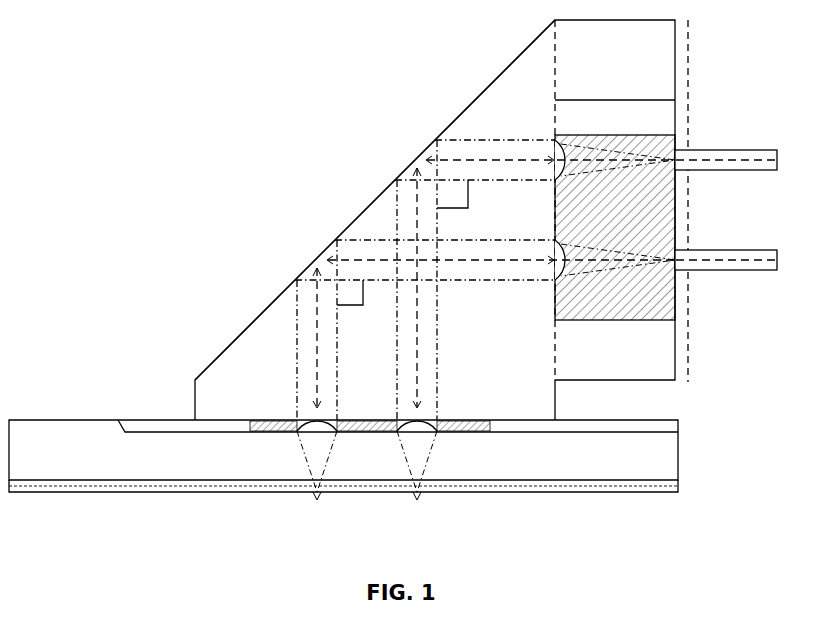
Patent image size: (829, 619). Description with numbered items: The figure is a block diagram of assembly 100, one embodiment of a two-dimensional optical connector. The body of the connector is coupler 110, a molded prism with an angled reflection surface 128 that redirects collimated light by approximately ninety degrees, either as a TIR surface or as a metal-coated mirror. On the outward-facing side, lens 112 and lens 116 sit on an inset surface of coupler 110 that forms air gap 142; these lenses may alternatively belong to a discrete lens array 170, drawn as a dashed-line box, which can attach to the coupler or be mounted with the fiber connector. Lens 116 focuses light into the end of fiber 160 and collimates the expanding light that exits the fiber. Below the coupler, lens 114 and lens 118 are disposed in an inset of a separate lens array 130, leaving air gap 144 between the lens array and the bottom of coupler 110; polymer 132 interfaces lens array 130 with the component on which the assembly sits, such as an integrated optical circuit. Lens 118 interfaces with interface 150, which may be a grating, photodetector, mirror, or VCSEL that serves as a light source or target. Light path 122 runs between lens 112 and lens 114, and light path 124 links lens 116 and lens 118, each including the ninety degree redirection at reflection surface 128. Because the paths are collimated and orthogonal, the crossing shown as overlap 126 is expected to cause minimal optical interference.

The assembly 100 is at (130, 47).
The coupler 110 is at (505, 95).
The lens 112 is at (567, 143).
The lens 114 is at (441, 433).
The lens 116 is at (568, 270).
The lens 118 is at (298, 420).
The light path 122 is at (450, 147).
The light path 124 is at (353, 243).
The overlap 126 is at (433, 280).
The reflection surface 128 is at (262, 310).
The lens array 130 is at (658, 455).
The polymer 132 is at (680, 488).
The air gap 142 is at (647, 214).
The air gap 144 is at (258, 420).
The interface 150 is at (313, 502).
The fiber 160 is at (762, 277).
The lens array 170 is at (688, 108).